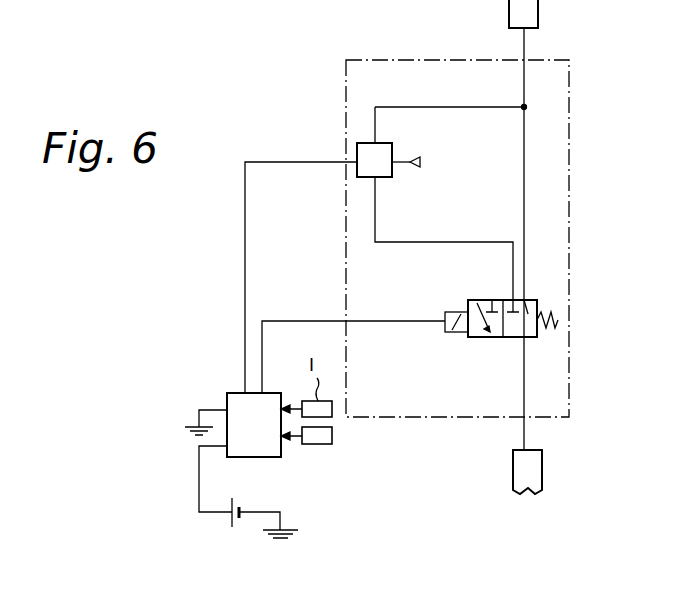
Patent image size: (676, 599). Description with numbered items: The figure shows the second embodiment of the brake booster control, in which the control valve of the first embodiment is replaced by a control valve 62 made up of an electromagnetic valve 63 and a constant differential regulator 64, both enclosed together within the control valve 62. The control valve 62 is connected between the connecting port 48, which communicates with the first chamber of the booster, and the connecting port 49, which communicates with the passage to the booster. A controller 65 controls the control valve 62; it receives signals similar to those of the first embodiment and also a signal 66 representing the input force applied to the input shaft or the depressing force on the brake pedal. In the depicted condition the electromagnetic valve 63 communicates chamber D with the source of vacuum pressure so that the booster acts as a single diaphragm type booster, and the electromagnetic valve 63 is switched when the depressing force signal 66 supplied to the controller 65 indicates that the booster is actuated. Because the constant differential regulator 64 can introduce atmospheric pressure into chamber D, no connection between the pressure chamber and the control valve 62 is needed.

The connecting port 48 is at (538, 6).
The connecting port 49 is at (542, 477).
The control valve 62 is at (460, 418).
The electromagnetic valve 63 is at (537, 300).
The constant differential regulator 64 is at (388, 177).
The controller 65 is at (232, 393).
The signal 66 is at (316, 444).